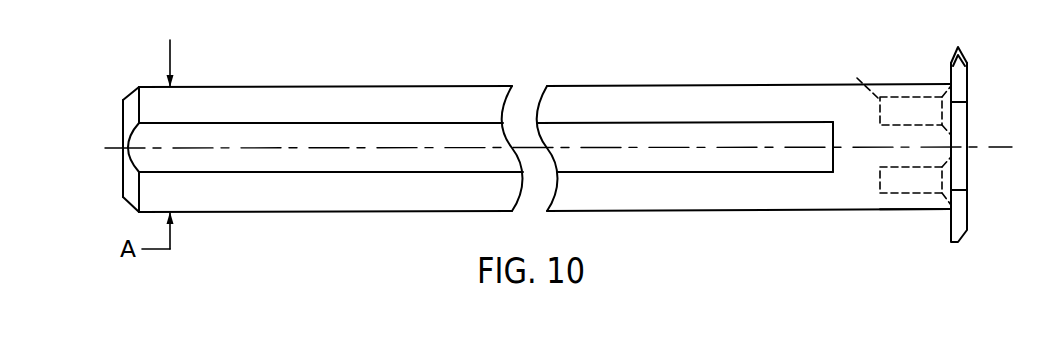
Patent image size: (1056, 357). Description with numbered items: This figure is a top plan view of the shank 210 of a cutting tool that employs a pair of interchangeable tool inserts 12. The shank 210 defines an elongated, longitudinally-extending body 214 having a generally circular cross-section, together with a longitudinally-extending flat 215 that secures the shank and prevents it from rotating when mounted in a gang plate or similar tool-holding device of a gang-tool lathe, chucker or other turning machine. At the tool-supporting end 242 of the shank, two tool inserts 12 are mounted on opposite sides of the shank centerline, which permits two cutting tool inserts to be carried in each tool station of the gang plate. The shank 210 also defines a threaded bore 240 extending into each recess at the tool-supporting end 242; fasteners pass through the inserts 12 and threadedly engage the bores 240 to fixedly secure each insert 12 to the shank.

The shank 210 is at (672, 73).
The elongated body 214 is at (246, 188).
The longitudinally-extending flat 215 is at (262, 133).
The threaded bore 240 is at (879, 183).
The tool-supporting end 242 is at (910, 210).
The tool insert 12 is at (968, 88).